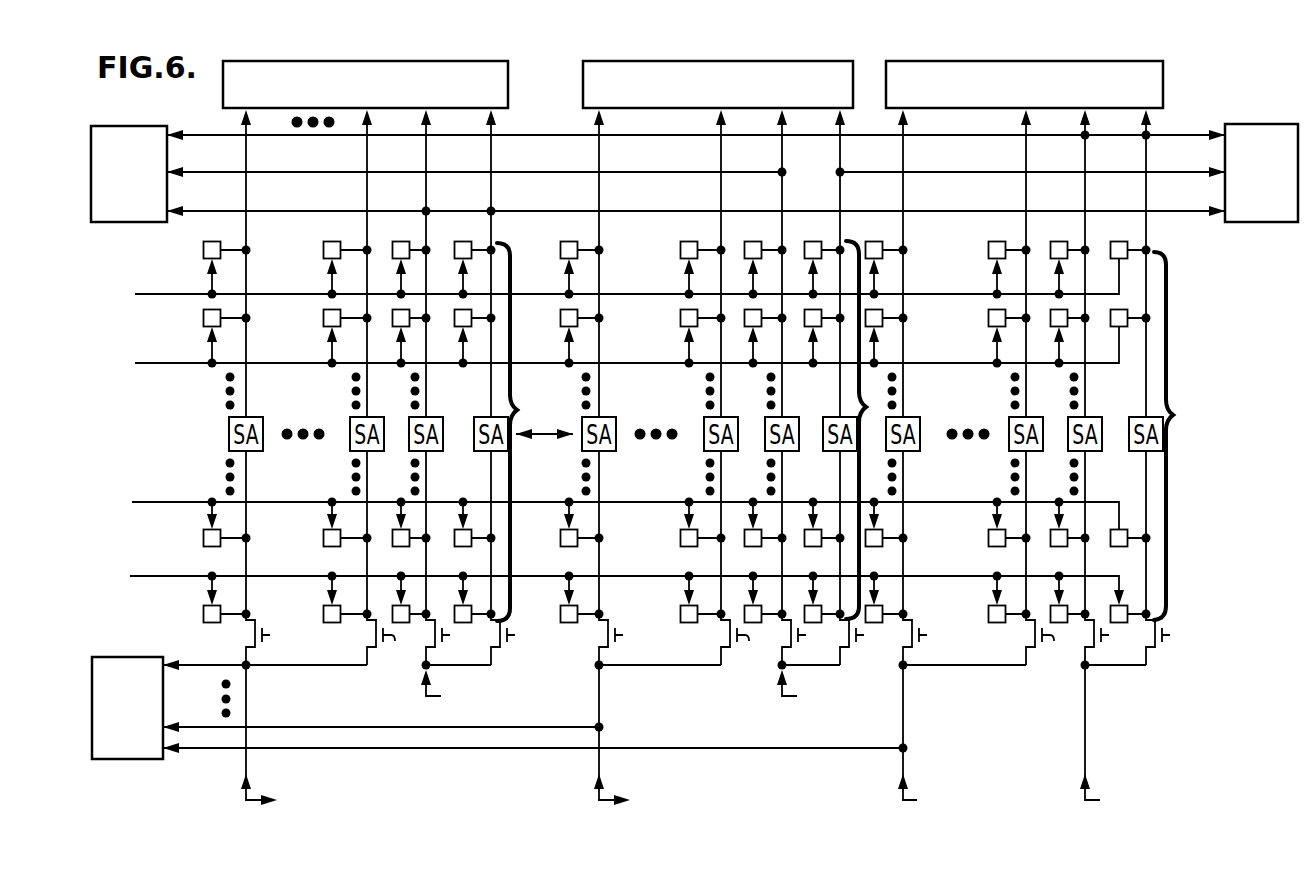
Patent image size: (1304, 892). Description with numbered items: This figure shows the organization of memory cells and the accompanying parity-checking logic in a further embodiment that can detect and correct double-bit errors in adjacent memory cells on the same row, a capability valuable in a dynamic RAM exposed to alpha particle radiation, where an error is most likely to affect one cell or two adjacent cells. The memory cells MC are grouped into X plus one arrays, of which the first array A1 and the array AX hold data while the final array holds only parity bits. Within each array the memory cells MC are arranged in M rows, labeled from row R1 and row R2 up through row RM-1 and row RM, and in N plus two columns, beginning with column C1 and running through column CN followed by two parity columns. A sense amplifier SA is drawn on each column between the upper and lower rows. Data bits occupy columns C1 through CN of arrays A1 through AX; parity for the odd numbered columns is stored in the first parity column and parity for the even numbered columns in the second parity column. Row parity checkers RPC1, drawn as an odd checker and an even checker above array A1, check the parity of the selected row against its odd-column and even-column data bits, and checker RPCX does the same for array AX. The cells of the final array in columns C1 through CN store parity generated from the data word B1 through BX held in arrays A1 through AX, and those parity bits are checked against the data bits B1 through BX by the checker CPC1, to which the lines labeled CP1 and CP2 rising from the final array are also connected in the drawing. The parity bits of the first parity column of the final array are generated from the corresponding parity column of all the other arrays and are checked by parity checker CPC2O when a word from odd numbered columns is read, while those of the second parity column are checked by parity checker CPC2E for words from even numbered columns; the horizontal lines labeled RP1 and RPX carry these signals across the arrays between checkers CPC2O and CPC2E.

The row parity checker RPC1 is at (365, 84).
The row parity checker RPCX is at (718, 84).
The parity checker CPC2O is at (129, 174).
The parity checker CPC2E is at (1261, 173).
The parity checker CPC1 is at (500, 708).
The row precharge line RPX is at (172, 172).
The row precharge line RP1 is at (192, 218).
The row RM is at (609, 286).
The row RM-1 is at (609, 355).
The row R2 is at (609, 508).
The row R1 is at (612, 583).
The memory cell MC is at (204, 540).
The column C1 is at (247, 245).
The column CN is at (367, 246).
The sense amplifier SA is at (229, 430).
The array A1 is at (535, 432).
The array AX is at (870, 430).
The data bit B1 is at (272, 741).
The data bit BX is at (657, 741).
The column precharge line CP1 is at (962, 741).
The column precharge line CP2 is at (1113, 741).